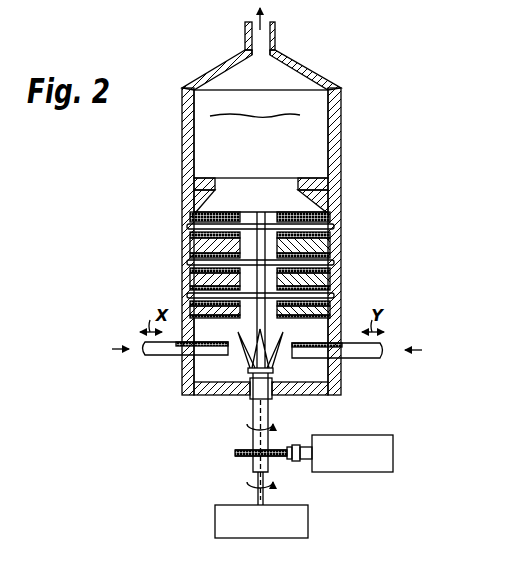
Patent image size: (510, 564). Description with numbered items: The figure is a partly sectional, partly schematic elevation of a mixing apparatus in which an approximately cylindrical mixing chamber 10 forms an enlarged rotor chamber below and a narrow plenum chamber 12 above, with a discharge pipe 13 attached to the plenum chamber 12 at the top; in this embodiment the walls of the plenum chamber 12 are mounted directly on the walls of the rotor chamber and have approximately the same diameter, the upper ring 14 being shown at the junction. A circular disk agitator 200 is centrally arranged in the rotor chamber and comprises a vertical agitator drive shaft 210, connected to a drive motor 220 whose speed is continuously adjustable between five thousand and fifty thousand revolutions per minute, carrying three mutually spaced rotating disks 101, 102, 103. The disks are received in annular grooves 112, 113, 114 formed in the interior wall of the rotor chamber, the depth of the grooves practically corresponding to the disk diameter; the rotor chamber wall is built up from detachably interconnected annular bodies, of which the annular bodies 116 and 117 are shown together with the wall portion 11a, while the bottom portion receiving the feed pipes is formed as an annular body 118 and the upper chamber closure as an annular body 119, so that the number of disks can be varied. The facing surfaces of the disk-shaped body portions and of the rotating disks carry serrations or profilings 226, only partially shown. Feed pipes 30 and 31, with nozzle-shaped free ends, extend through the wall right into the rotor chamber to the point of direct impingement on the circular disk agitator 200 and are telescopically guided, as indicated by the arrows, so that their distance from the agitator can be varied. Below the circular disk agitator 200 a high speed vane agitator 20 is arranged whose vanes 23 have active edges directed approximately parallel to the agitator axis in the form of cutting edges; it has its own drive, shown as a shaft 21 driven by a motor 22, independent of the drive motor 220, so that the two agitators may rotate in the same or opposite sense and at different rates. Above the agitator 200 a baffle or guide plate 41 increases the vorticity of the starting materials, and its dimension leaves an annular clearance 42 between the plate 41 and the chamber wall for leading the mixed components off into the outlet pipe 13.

The mixing chamber 10 is at (358, 172).
The plenum chamber 12 is at (228, 78).
The discharge pipe 13 is at (273, 40).
The upper ring 14 is at (323, 80).
The guide plate 41 is at (285, 116).
The annular clearance 42 is at (318, 110).
The annular body 119 is at (190, 200).
The serrations or profilings 226 is at (340, 219).
The rotating disk 103 is at (187, 228).
The annular groove 114 is at (340, 228).
The annular body 117 is at (187, 238).
The stator block 11a is at (340, 245).
The rotating disk 102 is at (187, 260).
The annular groove 113 is at (340, 262).
The annular body 116 is at (187, 275).
The rotating disk 101 is at (187, 296).
The annular groove 112 is at (340, 297).
The circular disk agitator 200 is at (260, 242).
The vanes 23 is at (247, 355).
The feed pipe 30 is at (160, 350).
The feed pipe 31 is at (365, 357).
The annular body 118 is at (182, 388).
The vane agitator 20 is at (330, 396).
The hollow shaft 21 is at (253, 413).
The motor 22 is at (393, 440).
The agitator drive shaft 210 is at (257, 497).
The drive motor 220 is at (215, 508).